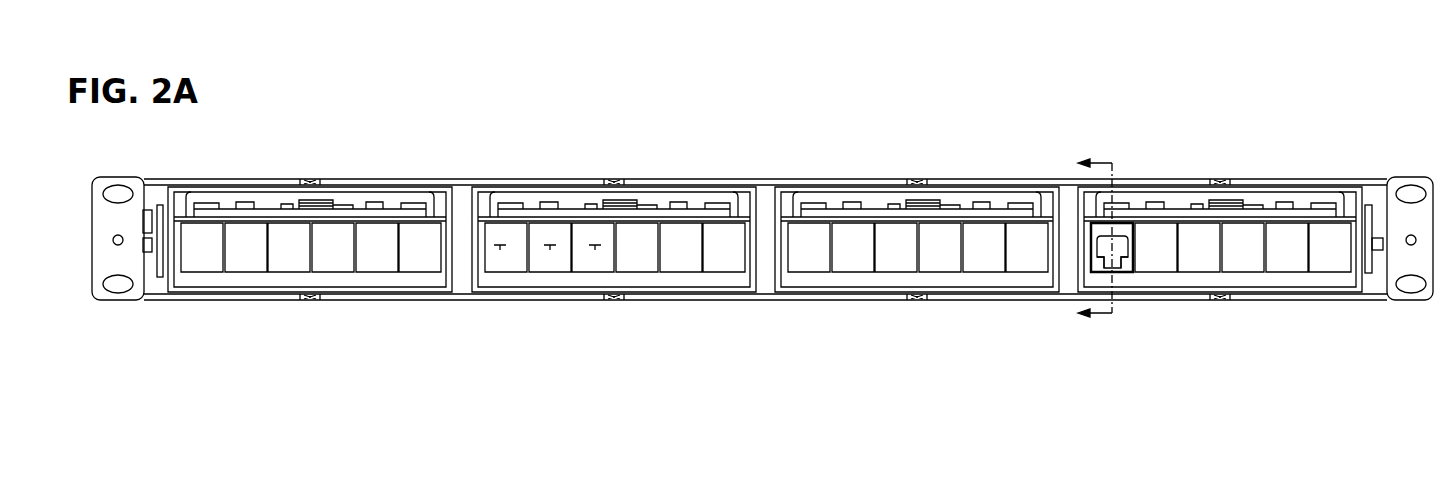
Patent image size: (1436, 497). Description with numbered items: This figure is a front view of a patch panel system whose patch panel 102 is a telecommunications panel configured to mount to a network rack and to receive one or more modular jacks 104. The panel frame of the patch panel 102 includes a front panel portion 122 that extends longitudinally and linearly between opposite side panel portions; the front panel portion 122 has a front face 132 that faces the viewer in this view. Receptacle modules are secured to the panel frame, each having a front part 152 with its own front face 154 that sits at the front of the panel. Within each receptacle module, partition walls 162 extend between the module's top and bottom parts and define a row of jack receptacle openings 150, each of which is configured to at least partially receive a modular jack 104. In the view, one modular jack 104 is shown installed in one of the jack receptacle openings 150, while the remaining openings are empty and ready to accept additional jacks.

The patch panel 102 is at (762, 248).
The modular jack 104 is at (1125, 270).
The front panel portion 122 is at (766, 197).
The front face 132 is at (762, 276).
The jack receptacle opening 150 is at (500, 250).
The front part 152 is at (1048, 203).
The front face 154 is at (1023, 203).
The partition wall 162 is at (615, 253).